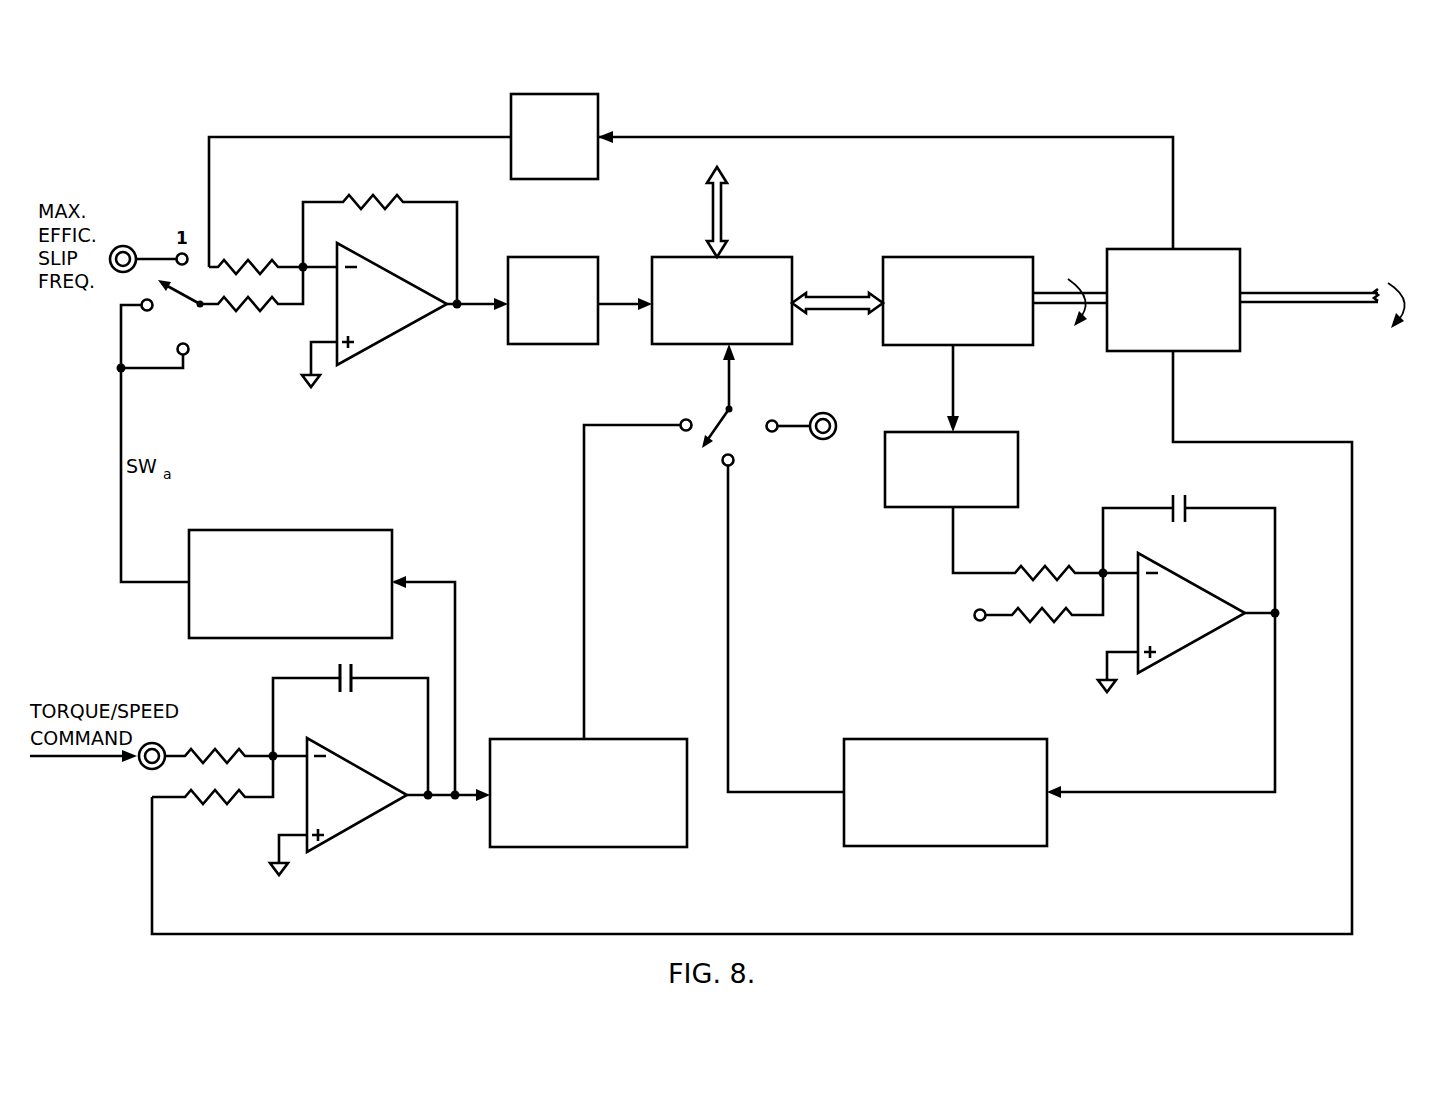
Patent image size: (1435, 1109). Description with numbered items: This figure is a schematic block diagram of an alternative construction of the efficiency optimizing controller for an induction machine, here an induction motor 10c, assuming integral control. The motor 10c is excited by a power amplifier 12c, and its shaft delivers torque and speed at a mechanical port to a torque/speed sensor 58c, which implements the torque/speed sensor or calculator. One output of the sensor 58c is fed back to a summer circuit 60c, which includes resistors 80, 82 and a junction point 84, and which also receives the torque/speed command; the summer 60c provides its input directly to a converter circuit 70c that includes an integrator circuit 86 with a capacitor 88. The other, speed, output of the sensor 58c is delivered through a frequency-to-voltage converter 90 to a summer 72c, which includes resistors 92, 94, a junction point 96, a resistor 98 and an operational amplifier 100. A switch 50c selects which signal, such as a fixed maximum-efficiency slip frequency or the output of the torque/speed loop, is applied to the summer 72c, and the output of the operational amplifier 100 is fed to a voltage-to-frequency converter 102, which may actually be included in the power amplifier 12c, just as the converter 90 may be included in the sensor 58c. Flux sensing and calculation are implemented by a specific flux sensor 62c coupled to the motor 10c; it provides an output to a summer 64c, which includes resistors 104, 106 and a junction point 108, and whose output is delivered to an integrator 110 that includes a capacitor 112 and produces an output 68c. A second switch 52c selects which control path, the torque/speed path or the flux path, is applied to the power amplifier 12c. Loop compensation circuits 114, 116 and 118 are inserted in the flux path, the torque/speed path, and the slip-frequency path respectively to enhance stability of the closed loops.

The induction motor 10c is at (932, 254).
The power amplifier 12c is at (780, 253).
The switch 50c is at (116, 356).
The switch 52c is at (708, 395).
The torque/speed sensor 58c is at (1150, 247).
The summer circuit 60c is at (269, 750).
The flux sensor 62c is at (979, 431).
The summer 64c is at (1113, 597).
The integrator output 68c is at (1312, 608).
The converter circuit 70c is at (340, 853).
The summer 72c is at (465, 223).
The resistor 80 is at (215, 746).
The resistor 82 is at (238, 811).
The junction point 84 is at (283, 752).
The integrator circuit 86 is at (380, 813).
The capacitor 88 is at (348, 664).
The frequency-to-voltage converter 90 is at (601, 122).
The resistor 92 is at (265, 257).
The resistor 94 is at (277, 313).
The junction point 96 is at (298, 259).
The resistor 98 is at (394, 197).
The operational amplifier 100 is at (418, 289).
The voltage-to-frequency converter 102 is at (553, 253).
The resistor 104 is at (1036, 560).
The resistor 106 is at (1058, 624).
The junction point 108 is at (1096, 566).
The integrator 110 is at (1205, 581).
The capacitor 112 is at (1183, 494).
The loop compensation circuit 114 is at (943, 852).
The loop compensation circuit 116 is at (622, 850).
The loop compensation circuit 118 is at (305, 528).